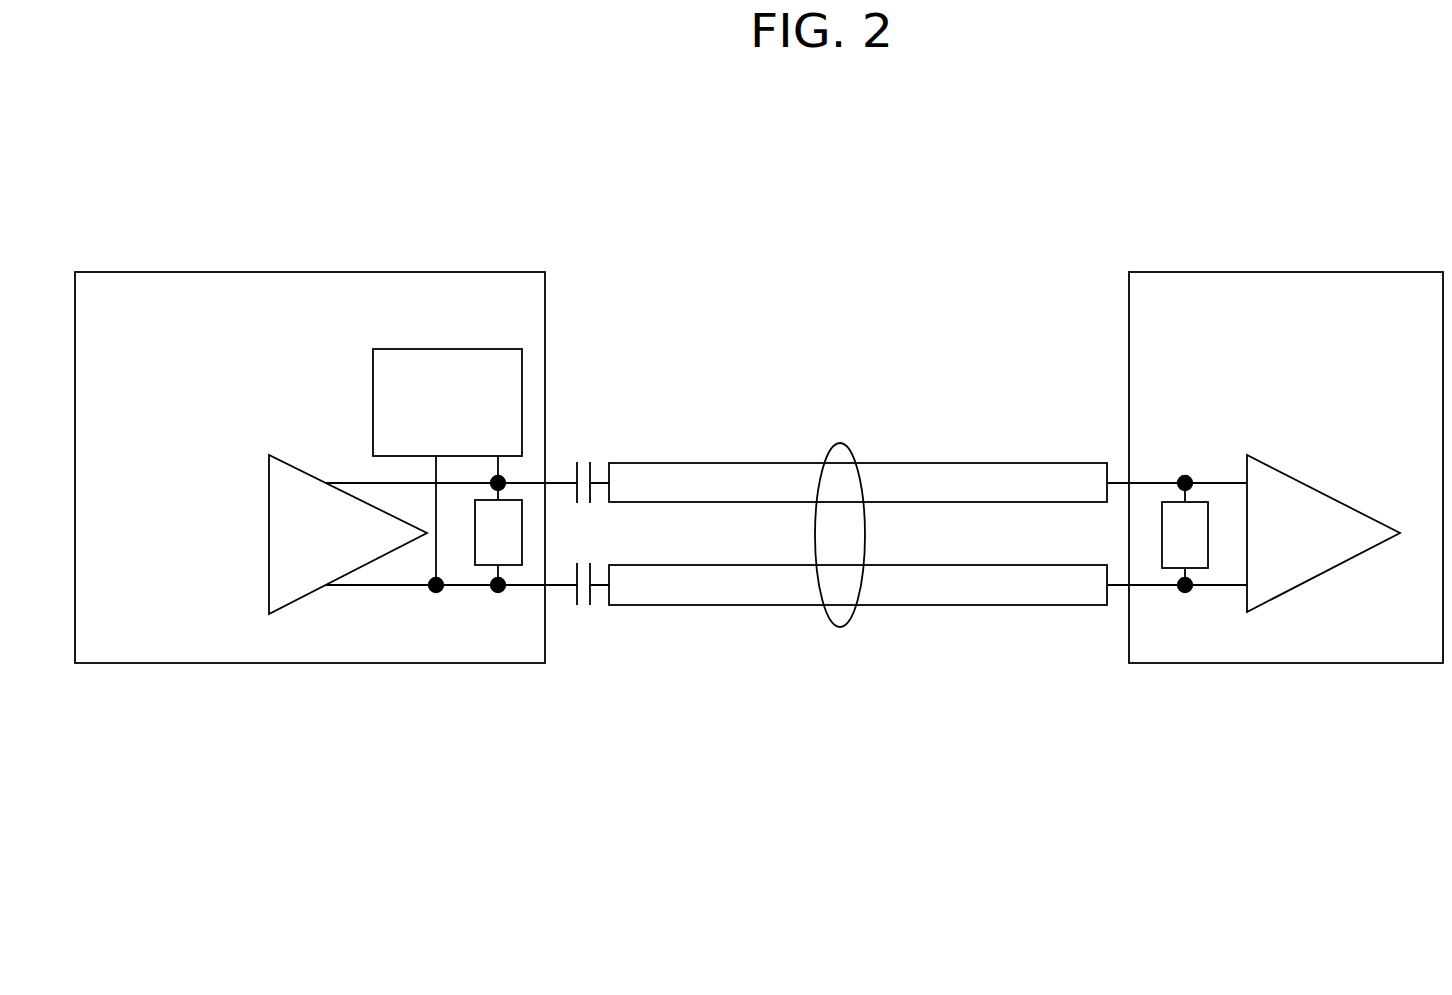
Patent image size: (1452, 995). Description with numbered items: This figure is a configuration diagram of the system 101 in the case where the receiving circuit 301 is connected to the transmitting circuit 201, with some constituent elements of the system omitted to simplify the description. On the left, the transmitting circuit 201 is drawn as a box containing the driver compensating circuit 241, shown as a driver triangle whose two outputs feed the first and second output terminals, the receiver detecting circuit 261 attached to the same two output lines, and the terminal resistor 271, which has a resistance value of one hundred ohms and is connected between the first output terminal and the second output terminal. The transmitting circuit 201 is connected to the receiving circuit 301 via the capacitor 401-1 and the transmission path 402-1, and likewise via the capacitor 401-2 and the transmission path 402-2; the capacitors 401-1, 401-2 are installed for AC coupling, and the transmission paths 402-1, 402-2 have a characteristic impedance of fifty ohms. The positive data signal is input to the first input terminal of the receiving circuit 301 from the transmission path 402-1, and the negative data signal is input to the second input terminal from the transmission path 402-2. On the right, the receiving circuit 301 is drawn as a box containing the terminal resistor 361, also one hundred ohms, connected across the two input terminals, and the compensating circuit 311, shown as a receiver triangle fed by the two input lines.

The system 101 is at (857, 355).
The transmitting circuit 201 is at (433, 271).
The driver compensating circuit 241 is at (268, 513).
The receiver detecting circuit 261 is at (372, 403).
The terminal resistor 271 is at (481, 566).
The receiving circuit 301 is at (1330, 271).
The compensating circuit 311 is at (1353, 506).
The terminal resistor 361 is at (1201, 501).
The capacitor 401-1 is at (574, 463).
The capacitor 401-2 is at (571, 606).
The transmission path 402-1 is at (666, 463).
The transmission path 402-2 is at (664, 565).